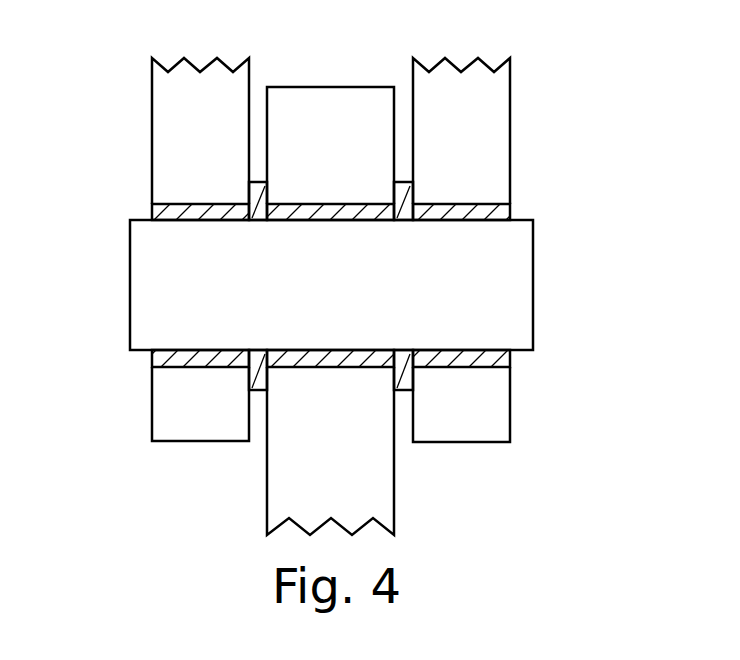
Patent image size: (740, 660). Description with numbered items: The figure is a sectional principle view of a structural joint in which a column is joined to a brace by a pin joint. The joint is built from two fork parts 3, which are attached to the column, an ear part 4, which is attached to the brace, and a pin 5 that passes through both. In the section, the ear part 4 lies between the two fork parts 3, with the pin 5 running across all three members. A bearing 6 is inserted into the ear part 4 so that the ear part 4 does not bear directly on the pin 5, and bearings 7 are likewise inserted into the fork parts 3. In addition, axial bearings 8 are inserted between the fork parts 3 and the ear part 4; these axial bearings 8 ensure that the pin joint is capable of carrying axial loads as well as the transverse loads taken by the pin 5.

The fork parts 3 is at (173, 130).
The ear part 4 is at (327, 117).
The pin 5 is at (518, 297).
The bearing 6 is at (350, 203).
The bearings 7 is at (203, 368).
The axial bearings 8 is at (408, 192).